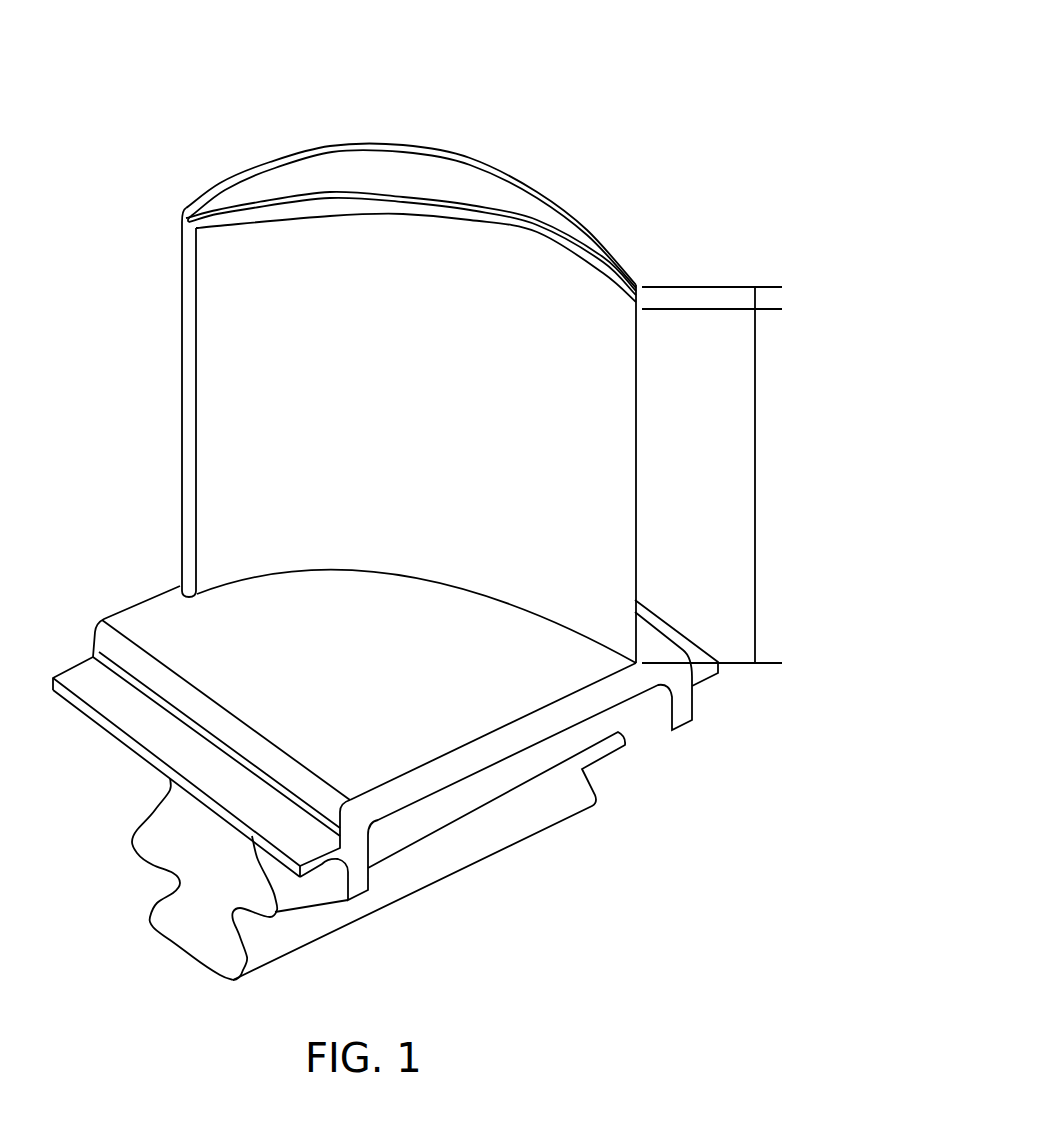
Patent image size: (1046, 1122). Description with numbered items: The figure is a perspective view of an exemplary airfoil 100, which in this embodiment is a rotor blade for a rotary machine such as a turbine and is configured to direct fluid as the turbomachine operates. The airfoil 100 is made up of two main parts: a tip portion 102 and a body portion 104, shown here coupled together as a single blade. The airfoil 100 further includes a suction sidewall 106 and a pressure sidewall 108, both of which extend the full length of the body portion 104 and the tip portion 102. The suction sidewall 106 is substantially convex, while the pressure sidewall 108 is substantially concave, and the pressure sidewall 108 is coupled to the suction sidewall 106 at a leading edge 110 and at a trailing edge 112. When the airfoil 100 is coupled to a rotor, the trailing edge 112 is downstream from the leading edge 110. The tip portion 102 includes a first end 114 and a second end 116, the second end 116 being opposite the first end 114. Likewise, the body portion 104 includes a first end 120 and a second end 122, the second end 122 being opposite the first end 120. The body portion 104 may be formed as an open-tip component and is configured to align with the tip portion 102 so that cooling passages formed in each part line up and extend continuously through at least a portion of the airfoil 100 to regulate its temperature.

The airfoil 100 is at (618, 48).
The tip portion 102 is at (757, 296).
The body portion 104 is at (757, 470).
The suction sidewall 106 is at (503, 182).
The pressure sidewall 108 is at (228, 453).
The leading edge 110 is at (178, 307).
The trailing edge 112 is at (638, 402).
The first end 114 is at (217, 226).
The second end 116 is at (265, 175).
The first end 120 is at (593, 640).
The second end 122 is at (442, 222).